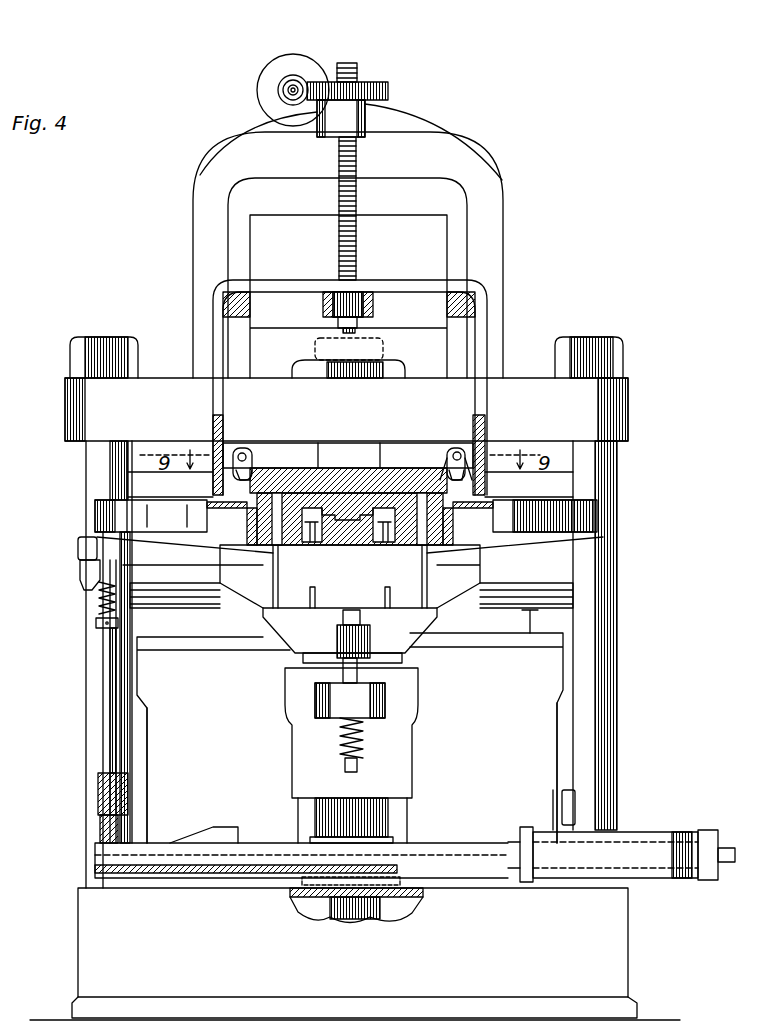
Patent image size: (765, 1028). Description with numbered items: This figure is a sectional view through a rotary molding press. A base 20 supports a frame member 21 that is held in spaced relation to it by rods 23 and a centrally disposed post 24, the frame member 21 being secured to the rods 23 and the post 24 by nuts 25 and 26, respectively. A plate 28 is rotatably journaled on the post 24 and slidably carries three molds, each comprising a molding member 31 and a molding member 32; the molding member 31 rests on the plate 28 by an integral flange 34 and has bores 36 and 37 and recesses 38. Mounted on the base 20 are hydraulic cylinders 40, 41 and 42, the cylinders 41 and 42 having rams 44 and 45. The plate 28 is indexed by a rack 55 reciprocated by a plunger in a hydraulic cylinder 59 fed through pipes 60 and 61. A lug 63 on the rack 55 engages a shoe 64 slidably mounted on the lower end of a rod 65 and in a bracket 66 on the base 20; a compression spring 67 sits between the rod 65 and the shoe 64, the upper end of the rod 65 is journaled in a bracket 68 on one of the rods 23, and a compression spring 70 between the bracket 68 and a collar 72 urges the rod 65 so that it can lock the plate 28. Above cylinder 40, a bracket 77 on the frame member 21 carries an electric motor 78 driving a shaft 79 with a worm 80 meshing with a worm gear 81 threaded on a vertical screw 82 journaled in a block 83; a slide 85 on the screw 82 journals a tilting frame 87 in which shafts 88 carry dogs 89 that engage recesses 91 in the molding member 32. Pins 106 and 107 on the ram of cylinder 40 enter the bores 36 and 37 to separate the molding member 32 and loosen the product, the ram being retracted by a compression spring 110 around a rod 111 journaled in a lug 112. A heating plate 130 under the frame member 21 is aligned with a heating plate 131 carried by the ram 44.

The base 20 is at (610, 932).
The frame member 21 is at (628, 408).
The rods 23 is at (86, 700).
The post 24 is at (348, 448).
The nuts 25 is at (70, 352).
The nut 26 is at (315, 346).
The plate 28 is at (95, 510).
The molding member 31 is at (348, 548).
The molding member 32 is at (292, 470).
The flange 34 is at (487, 478).
The bores 36 is at (272, 555).
The bores 37 is at (305, 550).
The recesses 38 is at (213, 545).
The hydraulic cylinder 40 is at (400, 760).
The hydraulic cylinder 41 is at (165, 748).
The hydraulic cylinder 42 is at (537, 760).
The ram 44 is at (188, 640).
The ram 45 is at (533, 622).
The rack 55 is at (480, 870).
The hydraulic cylinder 59 is at (660, 830).
The pipe 60 is at (562, 805).
The pipe 61 is at (731, 862).
The lug 63 is at (214, 827).
The shoe 64 is at (100, 832).
The rod 65 is at (110, 746).
The bracket 66 is at (98, 800).
The compression spring 67 is at (122, 814).
The bracket 68 is at (80, 568).
The compression spring 70 is at (99, 598).
The collar 72 is at (96, 624).
The bracket 77 is at (480, 160).
The electric motor 78 is at (290, 58).
The shaft 79 is at (300, 80).
The worm 80 is at (288, 91).
The worm gear 81 is at (376, 80).
The screw 82 is at (357, 250).
The block 83 is at (366, 118).
The slide 85 is at (213, 335).
The tilting frame 87 is at (462, 448).
The shafts 88 is at (242, 448).
The dogs 89 is at (246, 455).
The recesses 91 is at (252, 470).
The pins 106 is at (275, 587).
The pins 107 is at (378, 598).
The compression spring 110 is at (340, 740).
The rod 111 is at (345, 766).
The lug 112 is at (380, 710).
The heating plate 130 is at (128, 459).
The heating plate 131 is at (78, 548).